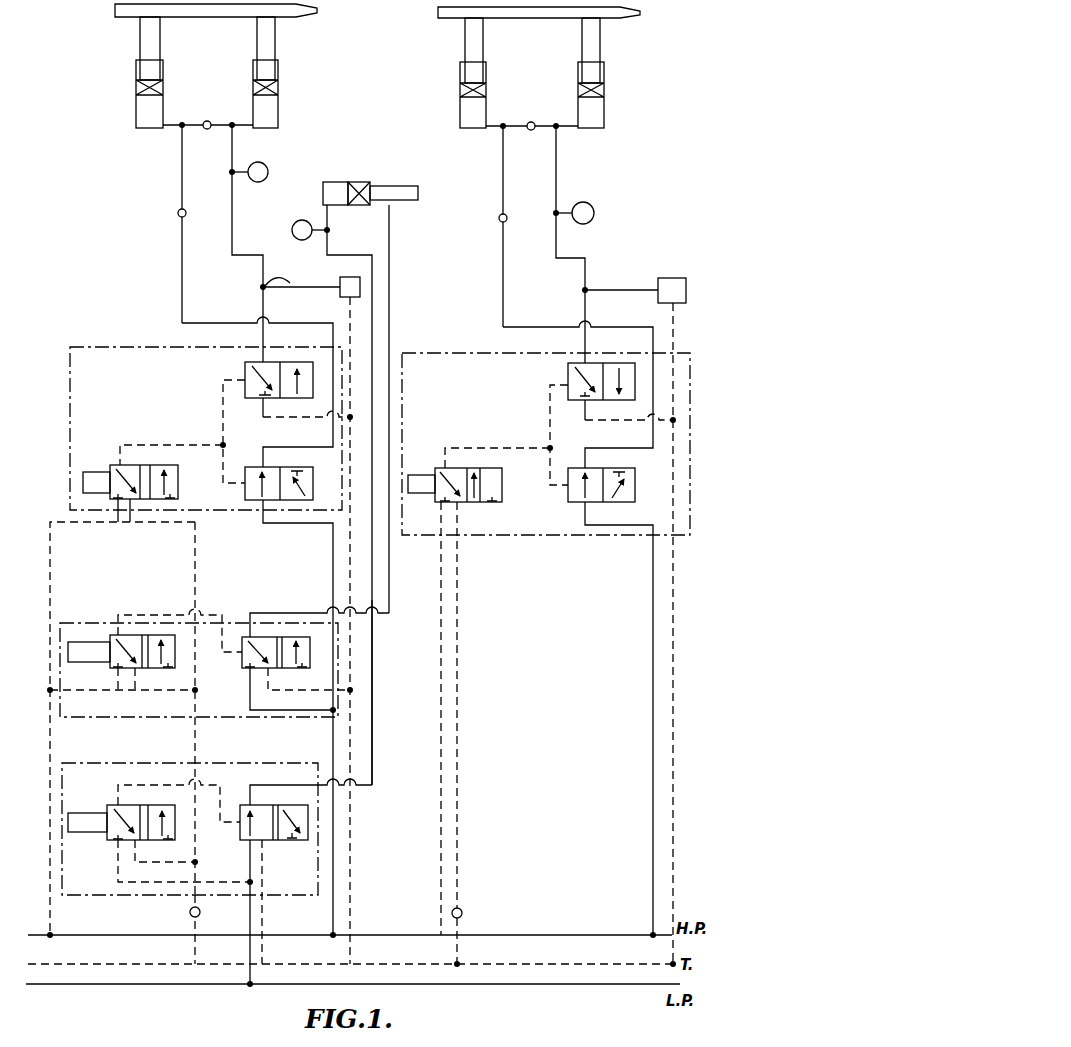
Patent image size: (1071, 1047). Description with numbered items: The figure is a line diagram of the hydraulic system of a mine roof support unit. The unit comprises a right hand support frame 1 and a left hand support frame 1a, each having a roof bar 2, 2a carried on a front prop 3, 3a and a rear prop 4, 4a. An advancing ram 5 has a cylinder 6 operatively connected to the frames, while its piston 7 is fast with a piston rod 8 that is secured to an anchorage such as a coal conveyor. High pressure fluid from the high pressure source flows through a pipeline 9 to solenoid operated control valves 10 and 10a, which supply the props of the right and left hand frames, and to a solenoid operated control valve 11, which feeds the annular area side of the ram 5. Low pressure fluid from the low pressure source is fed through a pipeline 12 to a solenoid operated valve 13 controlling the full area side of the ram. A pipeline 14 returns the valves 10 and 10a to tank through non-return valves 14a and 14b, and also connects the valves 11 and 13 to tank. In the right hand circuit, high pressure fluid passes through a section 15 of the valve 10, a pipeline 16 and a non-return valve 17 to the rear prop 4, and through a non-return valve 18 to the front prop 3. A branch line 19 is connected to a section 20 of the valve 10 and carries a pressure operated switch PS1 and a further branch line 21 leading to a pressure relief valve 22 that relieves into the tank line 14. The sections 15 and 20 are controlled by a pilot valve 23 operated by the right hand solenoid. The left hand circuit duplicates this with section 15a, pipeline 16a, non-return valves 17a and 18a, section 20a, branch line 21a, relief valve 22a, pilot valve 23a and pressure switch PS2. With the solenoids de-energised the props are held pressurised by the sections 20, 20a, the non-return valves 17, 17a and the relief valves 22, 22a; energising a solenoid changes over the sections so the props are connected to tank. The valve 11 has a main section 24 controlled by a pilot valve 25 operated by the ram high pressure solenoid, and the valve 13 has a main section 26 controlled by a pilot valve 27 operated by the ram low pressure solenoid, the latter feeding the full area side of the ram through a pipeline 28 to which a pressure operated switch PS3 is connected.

The right hand support frame 1 is at (539, 67).
The left hand support frame 1a is at (218, 66).
The roof bar 2 is at (540, 18).
The roof bar 2a is at (288, 10).
The front prop 3 is at (604, 110).
The front prop 3a is at (278, 118).
The rear prop 4 is at (488, 118).
The rear prop 4a is at (163, 118).
The advancing ram 5 is at (378, 185).
The cylinder 6 is at (347, 182).
The piston 7 is at (360, 210).
The piston rod 8 is at (394, 208).
The pipeline 9 is at (572, 906).
The solenoid operated control valve 10 is at (462, 352).
The solenoid operated control valve 10a is at (150, 346).
The solenoid operated control valve 11 is at (107, 622).
The pipeline 12 is at (482, 986).
The solenoid operated valve 13 is at (118, 895).
The pipeline 14 is at (470, 964).
The non-return valve 14a is at (462, 912).
The non-return valve 14b is at (200, 910).
The section of valve 10 15 is at (578, 502).
The section of valve 10a 15a is at (250, 500).
The pipeline 16 is at (644, 328).
The pipeline 16a is at (338, 327).
The non-return valve 17 is at (508, 216).
The non-return valve 17a is at (186, 214).
The non-return valve 18 is at (529, 132).
The non-return valve 18a is at (205, 131).
The branch line 19 is at (560, 158).
The section of valve 10 20 is at (578, 363).
The section of valve 10a 20a is at (245, 380).
The further branch line 21 is at (642, 286).
The further branch line 21a is at (277, 276).
The pressure relief valve 22 is at (692, 268).
The pressure relief valve 22a is at (360, 286).
The pilot valve 23 is at (447, 502).
The pilot valve 23a is at (122, 499).
The main section 24 is at (262, 637).
The pilot valve 25 is at (140, 635).
The main section 26 is at (264, 805).
The pilot valve 27 is at (108, 840).
The pipeline 28 is at (372, 688).
The pressure operated switch PS1 is at (590, 204).
The pressure operated switch PS2 is at (268, 172).
The pressure operated switch PS3 is at (295, 239).